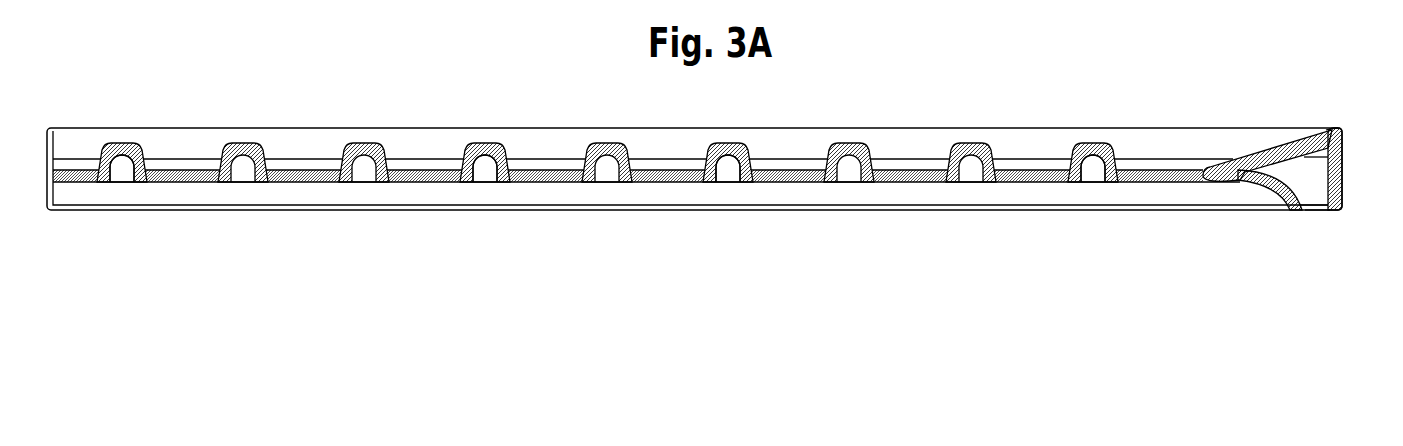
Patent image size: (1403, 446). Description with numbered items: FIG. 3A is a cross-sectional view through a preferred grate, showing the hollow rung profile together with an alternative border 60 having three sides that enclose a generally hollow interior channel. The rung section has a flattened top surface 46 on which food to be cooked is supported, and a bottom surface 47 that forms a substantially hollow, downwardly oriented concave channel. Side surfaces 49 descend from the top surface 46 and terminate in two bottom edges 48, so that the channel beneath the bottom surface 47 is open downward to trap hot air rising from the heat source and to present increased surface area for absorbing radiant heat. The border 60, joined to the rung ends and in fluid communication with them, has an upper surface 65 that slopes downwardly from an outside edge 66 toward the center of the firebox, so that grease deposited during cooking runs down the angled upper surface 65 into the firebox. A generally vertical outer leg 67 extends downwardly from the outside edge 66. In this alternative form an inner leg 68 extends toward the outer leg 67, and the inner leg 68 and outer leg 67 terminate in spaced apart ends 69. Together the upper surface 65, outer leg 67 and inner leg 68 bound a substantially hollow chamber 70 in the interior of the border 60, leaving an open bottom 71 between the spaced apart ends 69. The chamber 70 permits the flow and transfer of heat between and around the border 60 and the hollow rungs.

The top surface 46 is at (120, 143).
The bottom surface 47 is at (118, 156).
The bottom edges 48 is at (98, 163).
The side surfaces 49 is at (148, 153).
The border 60 is at (316, 189).
The upper surface 65 is at (1275, 141).
The outside edge 66 is at (1331, 131).
The outer leg 67 is at (1343, 170).
The inner leg 68 is at (1283, 193).
The spaced apart ends 69 is at (1302, 203).
The chamber 70 is at (1308, 174).
The open bottom 71 is at (1319, 222).